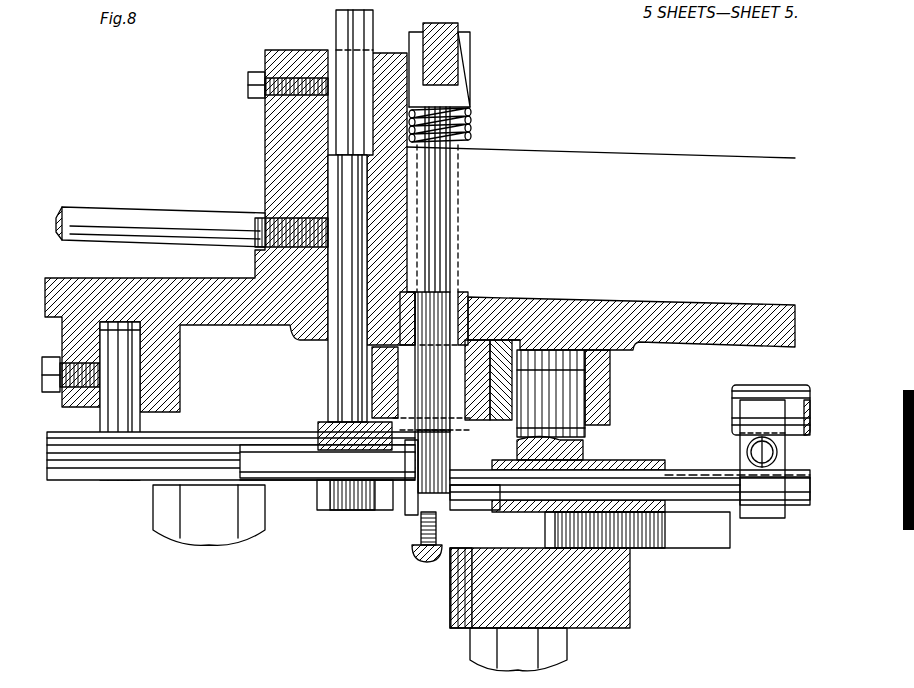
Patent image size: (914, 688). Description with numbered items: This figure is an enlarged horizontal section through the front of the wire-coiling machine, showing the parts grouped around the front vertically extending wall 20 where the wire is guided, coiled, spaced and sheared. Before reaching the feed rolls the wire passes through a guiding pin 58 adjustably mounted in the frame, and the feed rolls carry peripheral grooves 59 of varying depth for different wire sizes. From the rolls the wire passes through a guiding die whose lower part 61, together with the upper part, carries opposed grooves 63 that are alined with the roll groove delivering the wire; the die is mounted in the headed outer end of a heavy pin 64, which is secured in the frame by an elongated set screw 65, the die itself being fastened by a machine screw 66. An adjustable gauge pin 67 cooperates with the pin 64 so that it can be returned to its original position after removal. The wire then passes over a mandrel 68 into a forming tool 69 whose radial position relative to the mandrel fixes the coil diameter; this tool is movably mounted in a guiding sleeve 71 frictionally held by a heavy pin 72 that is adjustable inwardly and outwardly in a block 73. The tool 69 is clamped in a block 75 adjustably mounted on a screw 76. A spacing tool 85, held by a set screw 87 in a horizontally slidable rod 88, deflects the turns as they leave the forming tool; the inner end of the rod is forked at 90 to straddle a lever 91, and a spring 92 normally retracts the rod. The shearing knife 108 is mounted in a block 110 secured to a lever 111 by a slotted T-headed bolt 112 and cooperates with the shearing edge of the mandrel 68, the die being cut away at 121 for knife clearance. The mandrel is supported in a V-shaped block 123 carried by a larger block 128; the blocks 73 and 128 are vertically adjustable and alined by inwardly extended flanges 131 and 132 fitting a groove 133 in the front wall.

The front vertically extending wall 20 is at (243, 325).
The guiding pin 58 is at (142, 428).
The grooves 59 is at (85, 470).
The lower part of guiding die 61 is at (306, 488).
The opposed grooves 63 is at (327, 461).
The heavy pin 64 is at (324, 374).
The elongated set screw 65 is at (80, 209).
The machine screw 66 is at (372, 508).
The gauge pin 67 is at (338, 28).
The mandrel 68 is at (456, 255).
The forming tool 69 is at (478, 487).
The guiding sleeve 71 is at (626, 462).
The heavy pin 72 is at (584, 445).
The block 73 is at (612, 410).
The block 75 is at (740, 455).
The screw 76 is at (797, 392).
The spacing tool 85 is at (446, 462).
The set screw 87 is at (423, 553).
The rod 88 is at (459, 180).
The forked end 90 is at (471, 62).
The lever 91 is at (460, 30).
The spring 92 is at (466, 130).
The shearing knife 108 is at (467, 506).
The block 110 is at (681, 548).
The lever 111 is at (631, 605).
The slotted T-headed bolt 112 is at (525, 668).
The cut away portion of guiding die 121 is at (406, 500).
The V-shaped block 123 is at (455, 428).
The block 128 is at (420, 391).
The inwardly extended flange 131 is at (512, 340).
The inwardly extended flange 132 is at (472, 330).
The groove 133 is at (492, 338).